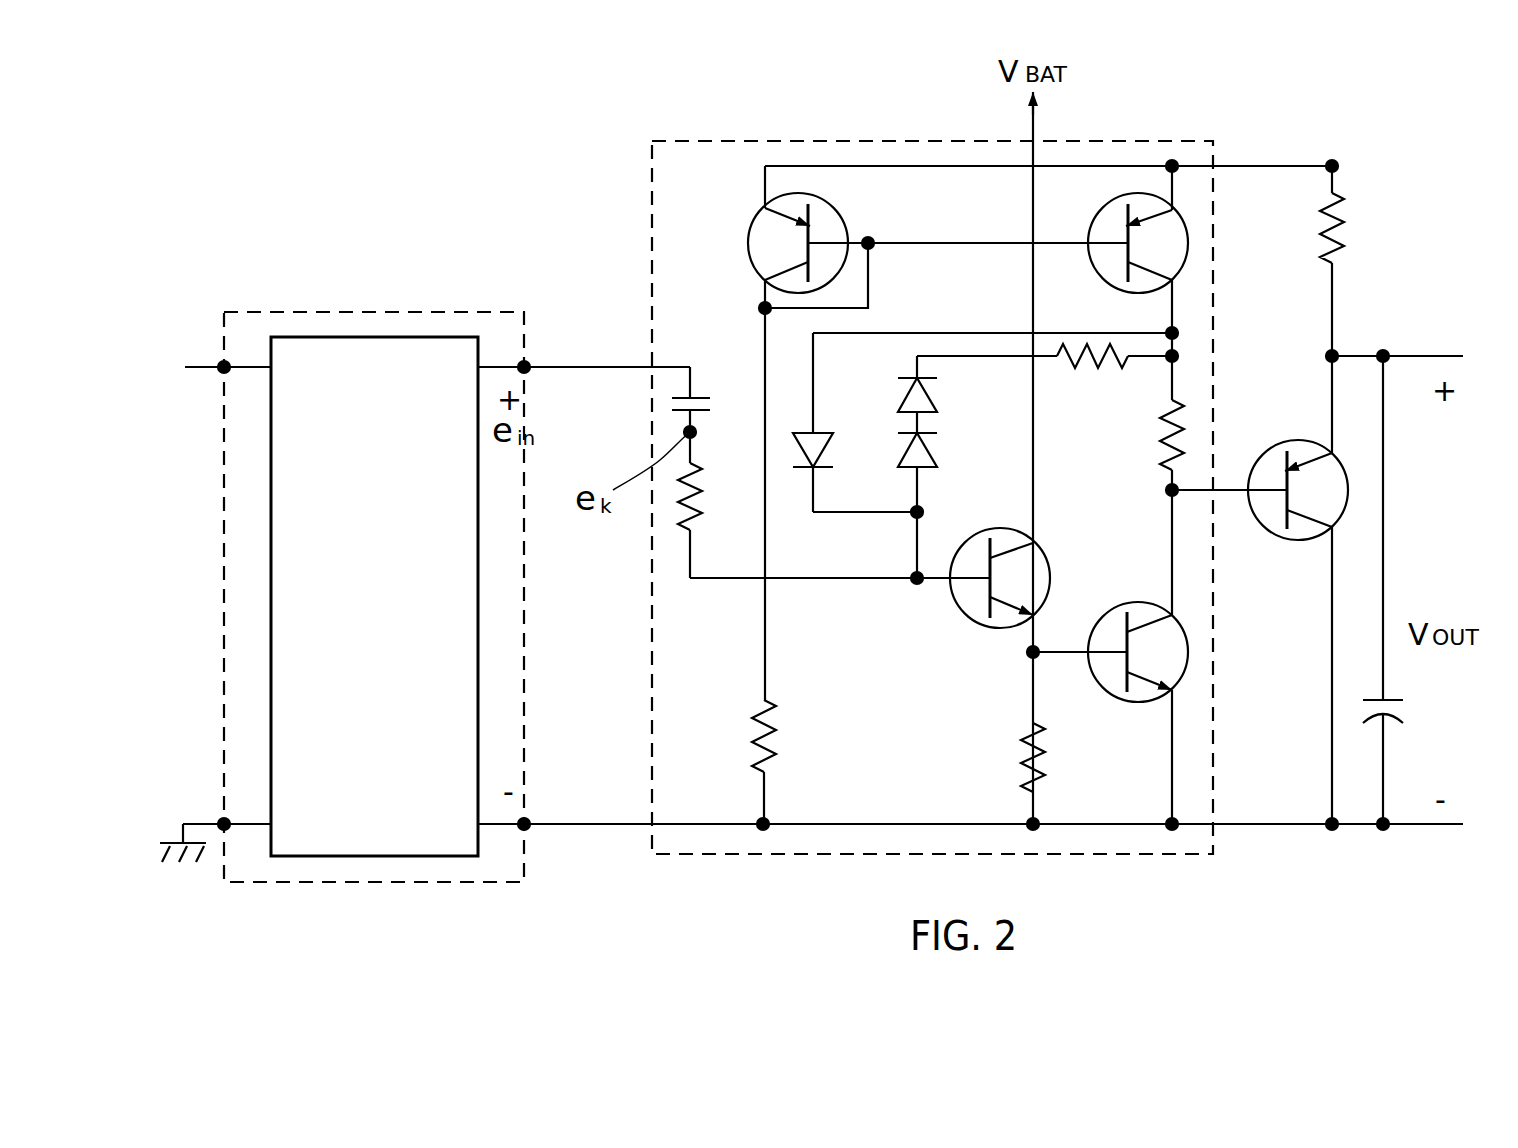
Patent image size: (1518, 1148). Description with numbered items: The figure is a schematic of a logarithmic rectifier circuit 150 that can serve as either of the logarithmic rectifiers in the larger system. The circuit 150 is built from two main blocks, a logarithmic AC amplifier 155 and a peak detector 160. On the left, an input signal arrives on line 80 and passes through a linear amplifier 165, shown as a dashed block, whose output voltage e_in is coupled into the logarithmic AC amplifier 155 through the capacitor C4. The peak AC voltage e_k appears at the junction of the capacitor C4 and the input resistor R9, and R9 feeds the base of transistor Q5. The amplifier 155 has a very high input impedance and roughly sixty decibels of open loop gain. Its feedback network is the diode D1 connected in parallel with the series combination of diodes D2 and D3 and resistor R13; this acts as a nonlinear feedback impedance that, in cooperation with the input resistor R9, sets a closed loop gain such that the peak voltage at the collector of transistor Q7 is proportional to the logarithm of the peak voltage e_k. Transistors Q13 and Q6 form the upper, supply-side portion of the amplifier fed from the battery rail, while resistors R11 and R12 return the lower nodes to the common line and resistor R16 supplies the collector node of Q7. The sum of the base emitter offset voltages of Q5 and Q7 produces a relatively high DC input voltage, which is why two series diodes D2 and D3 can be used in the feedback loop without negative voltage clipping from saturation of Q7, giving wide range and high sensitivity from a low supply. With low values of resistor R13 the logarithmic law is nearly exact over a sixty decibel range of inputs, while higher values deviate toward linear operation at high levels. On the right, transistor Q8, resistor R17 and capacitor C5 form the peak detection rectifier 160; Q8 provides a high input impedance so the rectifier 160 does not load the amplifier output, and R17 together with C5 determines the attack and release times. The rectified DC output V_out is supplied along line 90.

The line 80 is at (200, 367).
The line 90 is at (1420, 356).
The logarithmic rectifier circuit 150 is at (570, 872).
The logarithmic AC amplifier 155 is at (770, 855).
The peak detector 160 is at (1290, 852).
The linear amplifier 165 is at (352, 808).
The capacitor C4 is at (698, 398).
The capacitor C5 is at (1395, 700).
The input resistor R9 is at (687, 507).
The resistor R11 is at (775, 735).
The resistor R12 is at (1025, 770).
The resistor R13 is at (1103, 365).
The resistor R16 is at (1183, 420).
The resistor R17 is at (1343, 215).
The diode D1 is at (823, 440).
The diode D2 is at (937, 458).
The diode D3 is at (940, 400).
The transistor Q5 is at (1047, 560).
The transistor Q6 is at (1106, 207).
The transistor Q7 is at (1186, 627).
The transistor Q8 is at (1305, 540).
The transistor Q13 is at (834, 207).